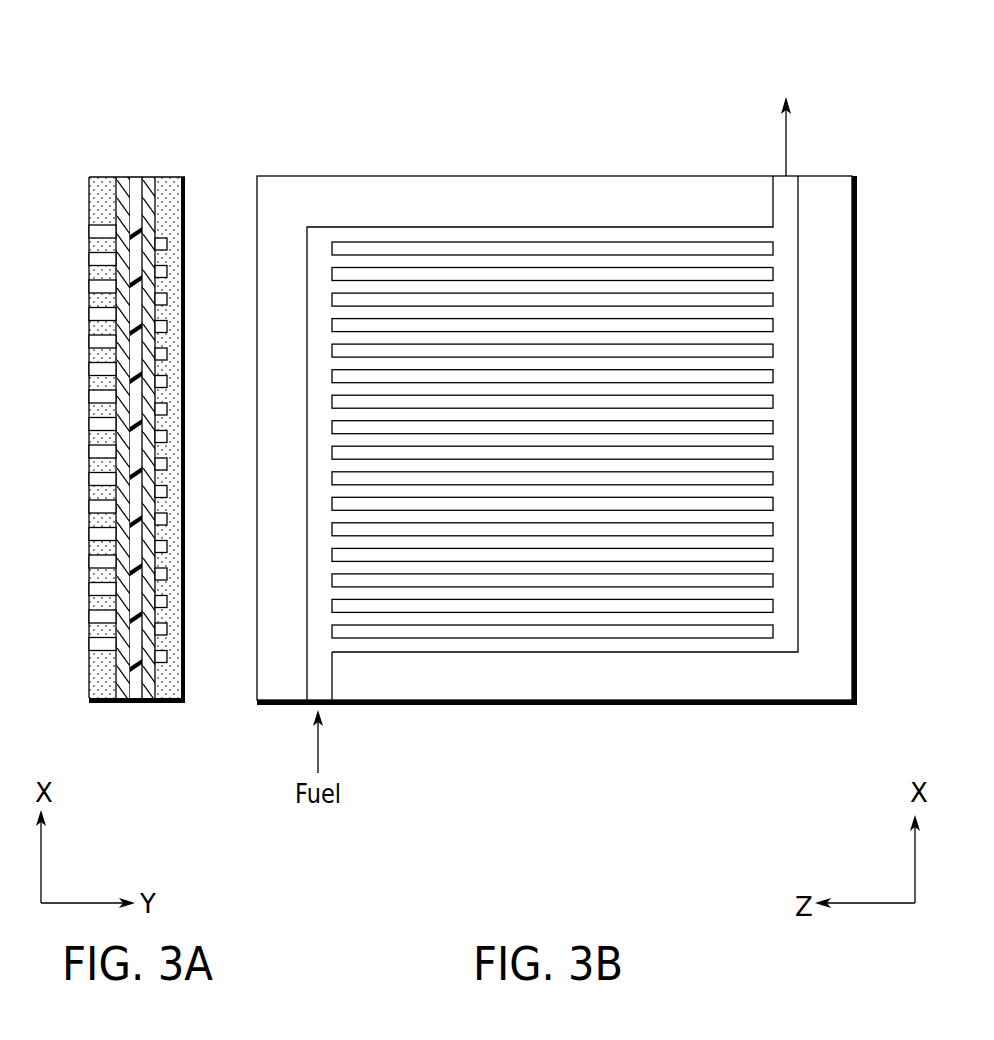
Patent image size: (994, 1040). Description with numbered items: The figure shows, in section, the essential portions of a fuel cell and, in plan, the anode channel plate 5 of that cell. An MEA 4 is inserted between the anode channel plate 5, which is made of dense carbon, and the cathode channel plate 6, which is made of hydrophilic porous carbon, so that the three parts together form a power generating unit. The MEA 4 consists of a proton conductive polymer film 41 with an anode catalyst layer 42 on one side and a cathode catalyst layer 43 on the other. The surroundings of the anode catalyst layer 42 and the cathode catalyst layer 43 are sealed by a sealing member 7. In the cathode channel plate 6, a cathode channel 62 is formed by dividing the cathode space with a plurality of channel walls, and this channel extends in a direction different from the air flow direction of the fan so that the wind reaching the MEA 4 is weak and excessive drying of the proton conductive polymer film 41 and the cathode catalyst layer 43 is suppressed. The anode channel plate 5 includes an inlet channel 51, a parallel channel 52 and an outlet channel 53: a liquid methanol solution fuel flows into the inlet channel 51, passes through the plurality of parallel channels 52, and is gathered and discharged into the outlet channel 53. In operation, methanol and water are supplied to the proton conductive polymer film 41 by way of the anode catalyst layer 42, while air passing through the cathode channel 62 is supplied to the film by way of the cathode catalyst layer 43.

In FIG. 3A, the MEA 4 is at (150, 366).
In FIG. 3A, the proton conductive polymer film 41 is at (135, 190).
In FIG. 3A, the anode catalyst layer 42 is at (183, 392).
In FIG. 3A, the cathode catalyst layer 43 is at (120, 228).
In FIG. 3A, the anode channel plate 5 is at (165, 440).
In FIG. 3B, the anode channel plate 5 is at (643, 176).
In FIG. 3B, the inlet channel 51 is at (305, 414).
In FIG. 3A, the parallel channel 52 is at (160, 605).
In FIG. 3B, the parallel channel 52 is at (763, 337).
In FIG. 3B, the outlet channel 53 is at (790, 440).
In FIG. 3A, the cathode channel plate 6 is at (84, 439).
In FIG. 3A, the cathode channel 62 is at (93, 617).
In FIG. 3A, the sealing member 7 is at (145, 698).